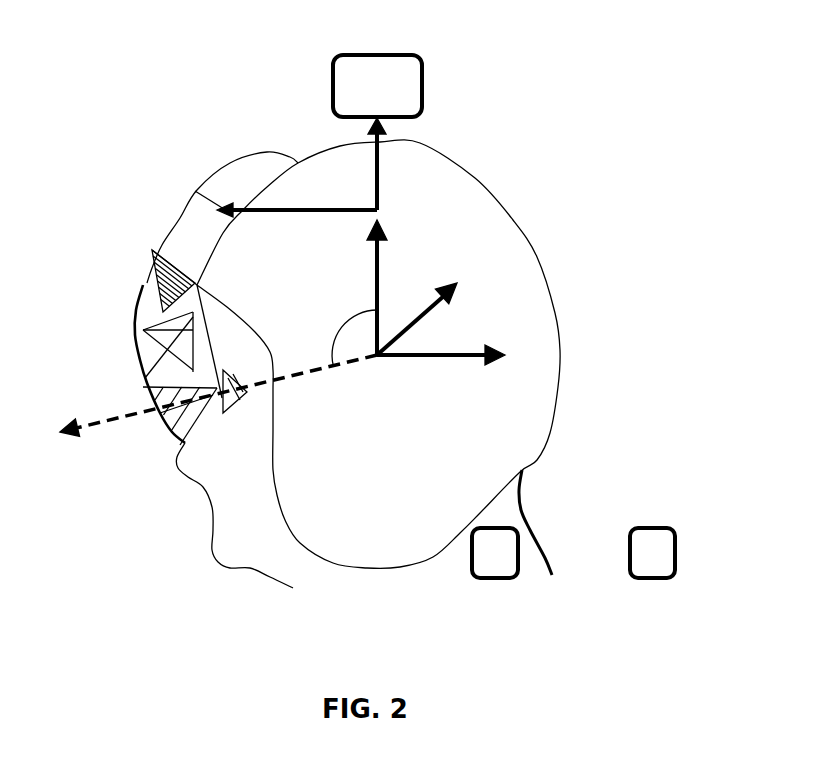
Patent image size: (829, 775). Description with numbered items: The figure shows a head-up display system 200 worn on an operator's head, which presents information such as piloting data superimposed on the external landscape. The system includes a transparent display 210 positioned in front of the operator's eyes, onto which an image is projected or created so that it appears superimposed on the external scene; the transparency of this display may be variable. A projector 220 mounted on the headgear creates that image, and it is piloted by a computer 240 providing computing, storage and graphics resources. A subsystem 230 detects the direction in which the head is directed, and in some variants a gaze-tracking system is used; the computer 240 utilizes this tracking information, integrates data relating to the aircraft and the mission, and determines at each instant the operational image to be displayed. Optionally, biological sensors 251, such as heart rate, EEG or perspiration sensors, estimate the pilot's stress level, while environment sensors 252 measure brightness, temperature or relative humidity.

The head-up display system 200 is at (92, 268).
The transparent display 210 is at (140, 375).
The projector 220 is at (180, 222).
The subsystem for detecting the direction of the head 230 is at (363, 297).
The computer 240 is at (378, 55).
The biological sensors 251 is at (523, 552).
The environment sensors 252 is at (677, 552).